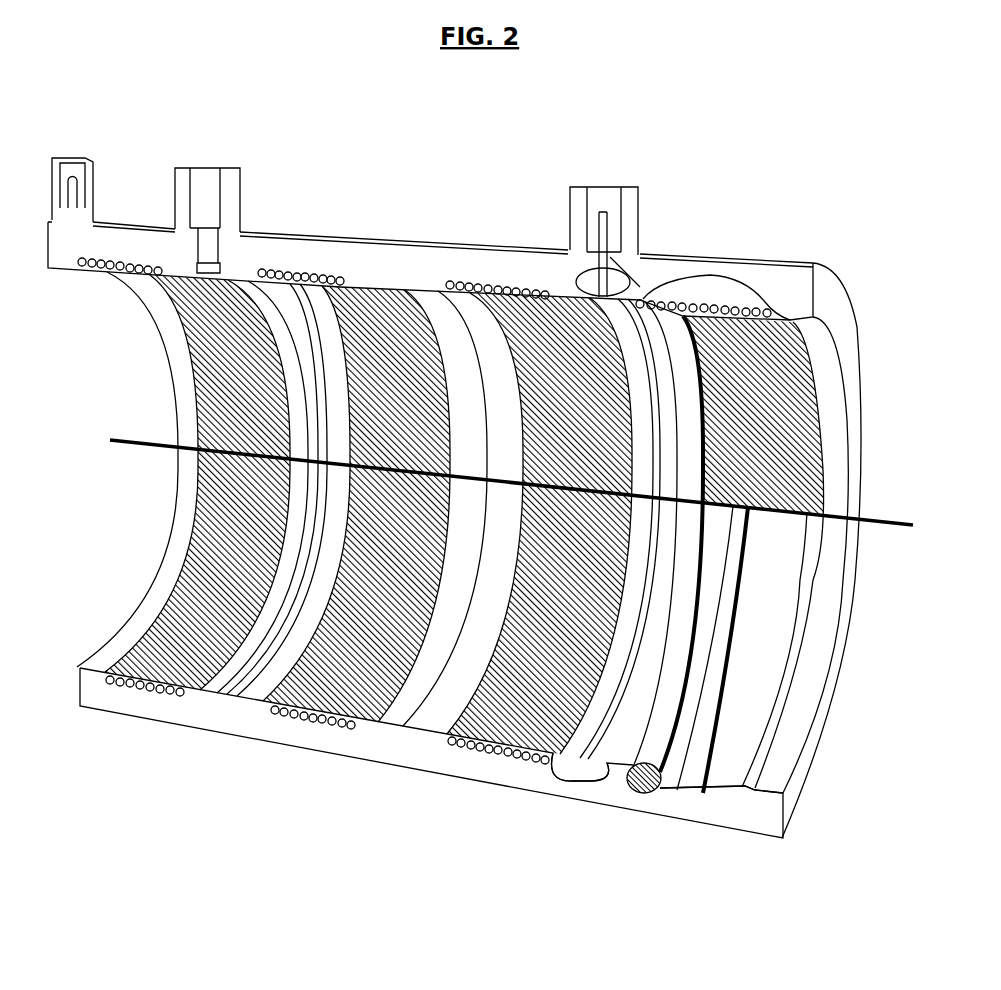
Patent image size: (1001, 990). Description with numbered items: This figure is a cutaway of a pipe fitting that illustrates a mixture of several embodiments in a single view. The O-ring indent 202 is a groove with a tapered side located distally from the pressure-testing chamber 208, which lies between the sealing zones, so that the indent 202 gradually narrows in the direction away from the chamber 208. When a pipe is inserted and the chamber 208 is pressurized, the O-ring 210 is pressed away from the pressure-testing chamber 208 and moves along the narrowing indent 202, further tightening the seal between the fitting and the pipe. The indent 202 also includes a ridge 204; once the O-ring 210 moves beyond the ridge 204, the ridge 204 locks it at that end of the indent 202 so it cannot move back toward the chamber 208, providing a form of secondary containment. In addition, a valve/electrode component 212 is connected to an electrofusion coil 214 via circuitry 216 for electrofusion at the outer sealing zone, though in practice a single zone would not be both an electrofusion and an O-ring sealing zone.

The O-ring indent 202 is at (776, 640).
The ridge 204 is at (673, 811).
The pressure-testing chamber 208 is at (572, 784).
The O-ring 210 is at (634, 804).
The valve/electrode component 212 is at (586, 206).
The coil 214 is at (784, 308).
The circuitry 216 is at (737, 269).